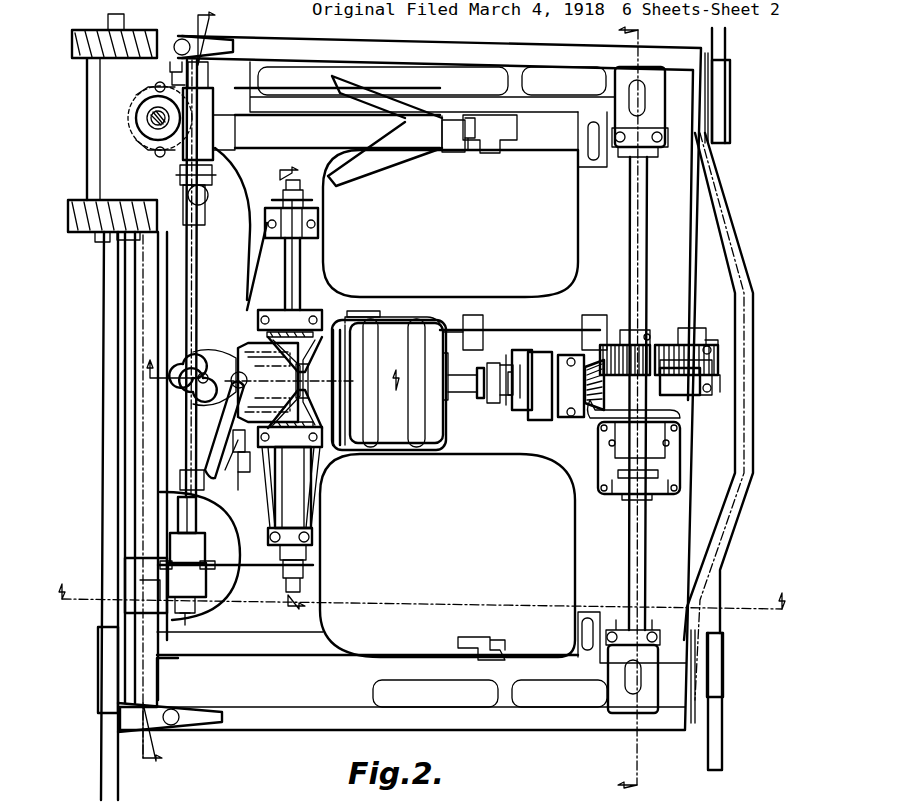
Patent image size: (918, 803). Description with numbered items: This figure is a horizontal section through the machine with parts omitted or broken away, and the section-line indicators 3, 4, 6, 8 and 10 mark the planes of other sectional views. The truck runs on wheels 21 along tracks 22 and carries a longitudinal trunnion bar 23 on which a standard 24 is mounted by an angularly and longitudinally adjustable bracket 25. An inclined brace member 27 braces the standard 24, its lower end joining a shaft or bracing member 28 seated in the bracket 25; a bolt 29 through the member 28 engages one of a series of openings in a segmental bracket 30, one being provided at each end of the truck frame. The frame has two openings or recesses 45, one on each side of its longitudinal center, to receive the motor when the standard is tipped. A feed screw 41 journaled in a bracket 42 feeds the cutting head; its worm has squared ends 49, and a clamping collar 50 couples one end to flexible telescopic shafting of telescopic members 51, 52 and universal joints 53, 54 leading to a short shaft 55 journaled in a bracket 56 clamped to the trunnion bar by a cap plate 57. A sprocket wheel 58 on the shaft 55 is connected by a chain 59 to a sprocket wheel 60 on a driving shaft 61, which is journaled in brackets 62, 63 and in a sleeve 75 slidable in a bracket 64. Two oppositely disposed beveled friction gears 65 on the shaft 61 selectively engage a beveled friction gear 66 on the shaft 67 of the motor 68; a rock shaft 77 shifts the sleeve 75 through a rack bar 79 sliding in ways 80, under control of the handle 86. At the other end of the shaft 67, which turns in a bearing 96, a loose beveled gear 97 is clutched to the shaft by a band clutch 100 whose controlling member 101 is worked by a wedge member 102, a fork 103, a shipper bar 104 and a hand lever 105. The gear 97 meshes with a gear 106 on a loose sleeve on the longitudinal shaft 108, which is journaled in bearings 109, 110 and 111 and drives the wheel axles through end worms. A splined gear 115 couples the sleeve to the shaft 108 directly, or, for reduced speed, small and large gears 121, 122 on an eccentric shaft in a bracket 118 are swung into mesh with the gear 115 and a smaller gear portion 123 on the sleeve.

The section line 6- 6 is at (186, 391).
The section line 3- 3 is at (639, 407).
The section line 4- 4 is at (419, 600).
The section line 8- 8 is at (286, 388).
The view direction 10 is at (272, 384).
The wheels 21 is at (760, 78).
The tracks 22 is at (756, 185).
The trunnion bar 23 is at (140, 328).
The standard 24 is at (78, 62).
The bracket 25 is at (160, 172).
The inclined brace member 27 is at (432, 150).
The shaft or bracing member 28 is at (280, 130).
The bolt 29 is at (472, 150).
The segmental bracket 30 is at (500, 150).
The feed screw 41 is at (148, 118).
The bracket 42 is at (207, 100).
The recesses or openings 45 is at (410, 383).
The squared ends 49 is at (170, 70).
The clamping collar 50 is at (212, 175).
The telescopic member 51 is at (197, 295).
The telescopic member 52 is at (184, 488).
The universal joint 53 is at (208, 200).
The universal joint 54 is at (198, 533).
The short shaft 55 is at (190, 630).
The bracket 56 is at (235, 615).
The cap plate 57 is at (125, 578).
The sprocket wheel 58 is at (205, 555).
The chain 59 is at (235, 574).
The sprocket wheel 60 is at (312, 203).
The driving shaft 61 is at (300, 258).
The bracket 62 is at (318, 224).
The bracket 63 is at (297, 318).
The bracket 64 is at (312, 520).
The beveled friction gears 65 is at (322, 320).
The beveled friction gear 66 is at (352, 450).
The shaft 67 is at (462, 385).
The motor 68 is at (405, 330).
The sleeve 75 is at (298, 495).
The rock shaft 77 is at (233, 465).
The bar 79 is at (227, 467).
The ways 80 is at (225, 455).
The controlling lever or handle 86 is at (205, 428).
The bearing 96 is at (564, 417).
The beveled gear 97 is at (590, 418).
The band clutch 100 is at (540, 352).
The controlling member 101 is at (522, 410).
The cam or wedge member 102 is at (503, 400).
The fork 103 is at (486, 362).
The shipper bar 104 is at (520, 330).
The hand lever 105 is at (378, 310).
The gear 106 is at (680, 415).
The shaft 108 is at (630, 530).
The bearing 109 is at (618, 70).
The bearing 110 is at (660, 475).
The bearing 111 is at (645, 700).
The gear 115 is at (612, 345).
The bracket 118 is at (720, 360).
The small gear 121 is at (712, 345).
The large gear 122 is at (718, 380).
The smaller gear portion 123 is at (662, 345).